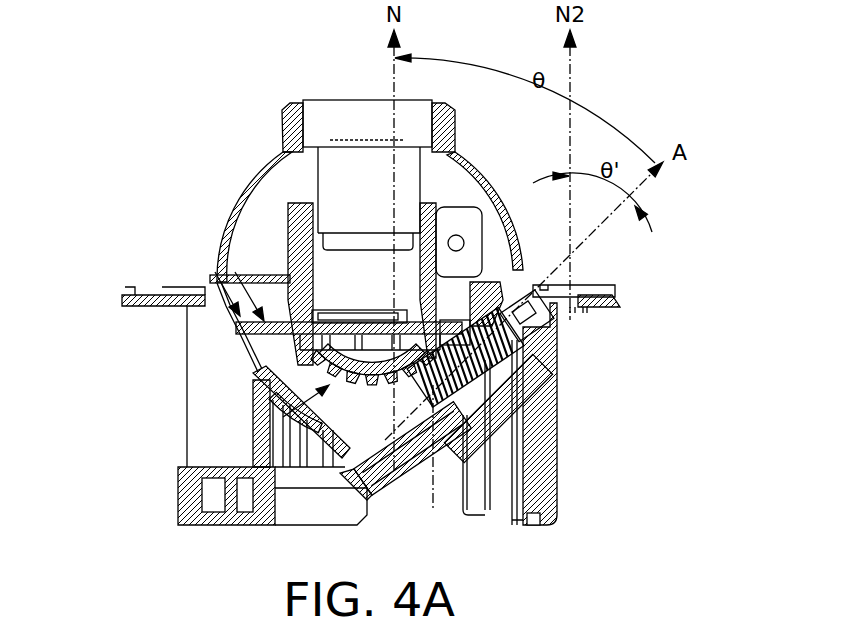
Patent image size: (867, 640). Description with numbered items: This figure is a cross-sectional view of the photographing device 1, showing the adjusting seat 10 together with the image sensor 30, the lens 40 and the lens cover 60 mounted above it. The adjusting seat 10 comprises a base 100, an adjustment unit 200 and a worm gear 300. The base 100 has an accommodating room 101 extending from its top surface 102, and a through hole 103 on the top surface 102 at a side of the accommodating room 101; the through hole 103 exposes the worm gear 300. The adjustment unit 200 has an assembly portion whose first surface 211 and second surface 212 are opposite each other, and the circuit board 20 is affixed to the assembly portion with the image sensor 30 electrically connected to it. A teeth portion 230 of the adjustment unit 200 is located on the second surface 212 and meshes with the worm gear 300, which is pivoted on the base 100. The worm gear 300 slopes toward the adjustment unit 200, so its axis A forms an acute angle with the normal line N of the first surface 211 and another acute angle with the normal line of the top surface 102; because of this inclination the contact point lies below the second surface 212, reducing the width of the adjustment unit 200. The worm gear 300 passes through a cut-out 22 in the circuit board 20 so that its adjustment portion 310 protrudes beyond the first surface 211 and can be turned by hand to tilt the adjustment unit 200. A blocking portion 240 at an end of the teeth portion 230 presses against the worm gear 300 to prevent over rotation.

The photographing device 1 is at (90, 25).
The adjusting seat 10 is at (605, 453).
The circuit board 20 is at (222, 298).
The cut-out 22 is at (461, 327).
The image sensor 30 is at (344, 322).
The lens 40 is at (417, 108).
The lens cover 60 is at (473, 161).
The base 100 is at (561, 492).
The accommodating room 101 is at (230, 280).
The top surface 102 is at (588, 290).
The through hole 103 is at (417, 472).
The adjustment unit 200 is at (352, 421).
The first surface 211 is at (382, 322).
The second surface 212 is at (453, 444).
The teeth portion 230 is at (362, 421).
The blocking portion 240 is at (290, 352).
The worm gear 300 is at (503, 369).
The adjustment portion 310 is at (548, 320).